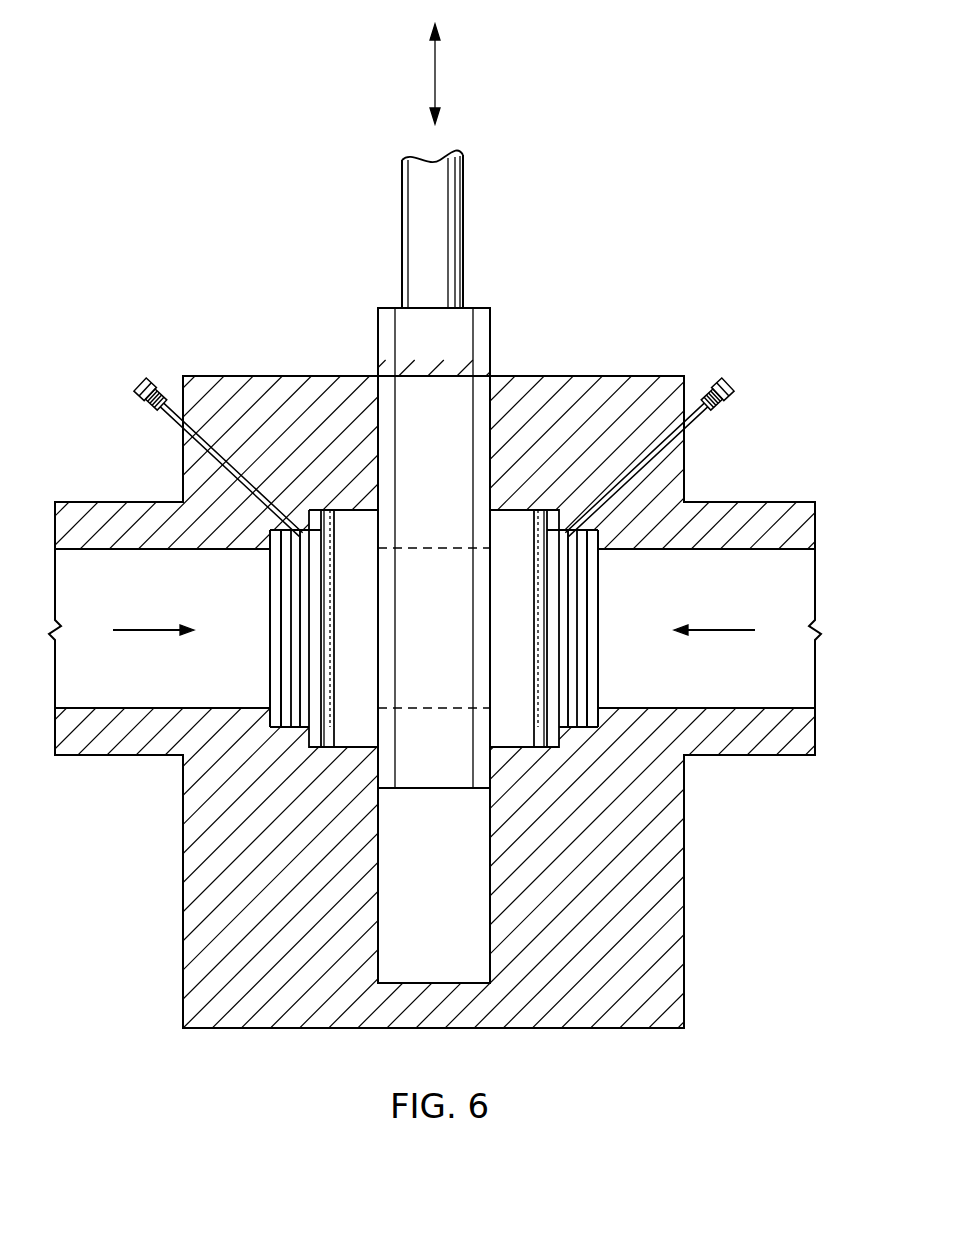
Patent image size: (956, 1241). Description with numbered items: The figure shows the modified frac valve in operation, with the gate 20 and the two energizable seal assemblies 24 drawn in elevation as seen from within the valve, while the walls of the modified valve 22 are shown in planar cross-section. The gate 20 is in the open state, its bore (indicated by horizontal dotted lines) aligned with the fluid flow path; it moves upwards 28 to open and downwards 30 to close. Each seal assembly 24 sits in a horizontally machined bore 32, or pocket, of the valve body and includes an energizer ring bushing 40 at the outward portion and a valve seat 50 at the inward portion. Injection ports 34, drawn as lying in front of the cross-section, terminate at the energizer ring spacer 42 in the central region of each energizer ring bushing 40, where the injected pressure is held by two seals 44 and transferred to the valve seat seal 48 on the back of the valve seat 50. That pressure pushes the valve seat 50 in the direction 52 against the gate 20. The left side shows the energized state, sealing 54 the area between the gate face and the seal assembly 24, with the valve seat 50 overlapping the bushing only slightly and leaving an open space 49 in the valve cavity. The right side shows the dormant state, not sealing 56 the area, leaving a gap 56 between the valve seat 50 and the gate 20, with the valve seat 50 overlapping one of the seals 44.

The gate 20 is at (481, 307).
The modified valve 22 is at (138, 803).
The energizable seal assembly 24 is at (110, 887).
The upwards movement 28 is at (432, 36).
The downwards movement 30 is at (438, 122).
The horizontally machined bore 32 is at (362, 510).
The injection port 34 is at (140, 375).
The energizer ring bushing 40 is at (300, 700).
The energizer ring spacer 42 is at (298, 583).
The seal 44 is at (315, 645).
The valve seat seal 48 is at (327, 520).
The open space 49 is at (315, 518).
The valve seat 50 is at (357, 737).
The direction of force 52 is at (152, 628).
The sealing 54 is at (371, 768).
The gap 56 is at (496, 580).